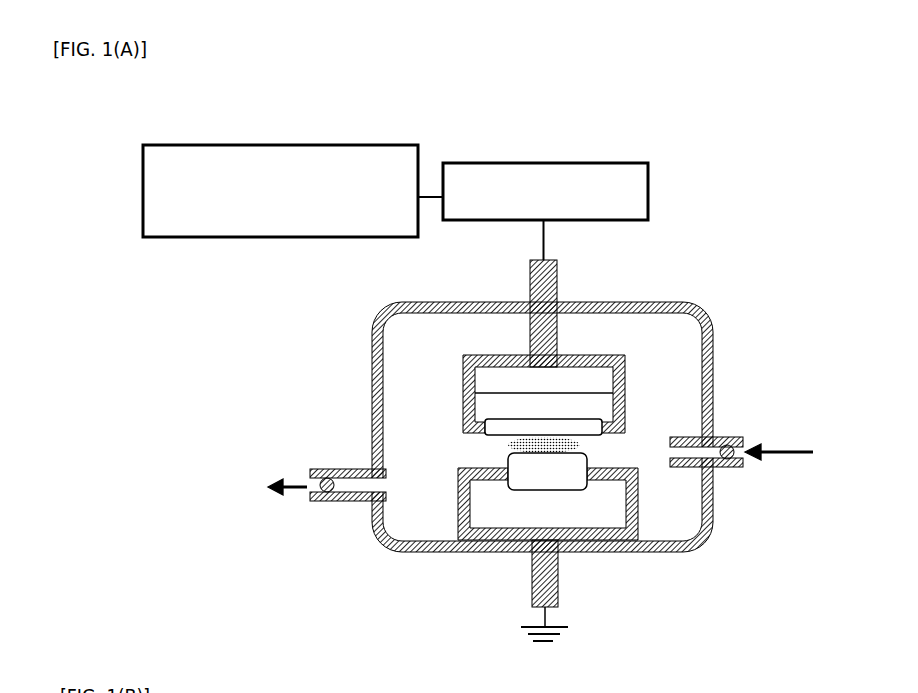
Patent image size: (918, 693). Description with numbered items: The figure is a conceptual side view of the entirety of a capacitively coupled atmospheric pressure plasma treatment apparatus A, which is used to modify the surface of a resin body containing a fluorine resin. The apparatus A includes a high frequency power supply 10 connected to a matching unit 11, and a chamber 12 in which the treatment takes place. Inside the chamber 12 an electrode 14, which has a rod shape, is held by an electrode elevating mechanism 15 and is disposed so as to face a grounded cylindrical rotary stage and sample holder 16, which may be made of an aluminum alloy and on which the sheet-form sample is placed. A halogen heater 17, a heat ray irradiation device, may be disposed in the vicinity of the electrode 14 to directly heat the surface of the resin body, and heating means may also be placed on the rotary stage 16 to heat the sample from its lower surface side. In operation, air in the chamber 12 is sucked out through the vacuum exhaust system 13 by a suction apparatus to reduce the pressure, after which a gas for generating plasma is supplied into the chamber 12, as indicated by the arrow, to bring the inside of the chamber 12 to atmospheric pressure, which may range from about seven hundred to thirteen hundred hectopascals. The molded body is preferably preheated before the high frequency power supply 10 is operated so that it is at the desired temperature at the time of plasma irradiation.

The high frequency power supply 10 is at (280, 191).
The matching unit 11 is at (533, 191).
The chamber 12 is at (487, 409).
The vacuum exhaust system 13 is at (296, 467).
The electrode 14 is at (625, 342).
The electrode elevating mechanism 15 is at (648, 290).
The grounded cylindrical rotary stage and sample holder 16 is at (584, 526).
The halogen heater 17 is at (441, 372).
The atmospheric pressure plasma treatment apparatus A is at (356, 401).